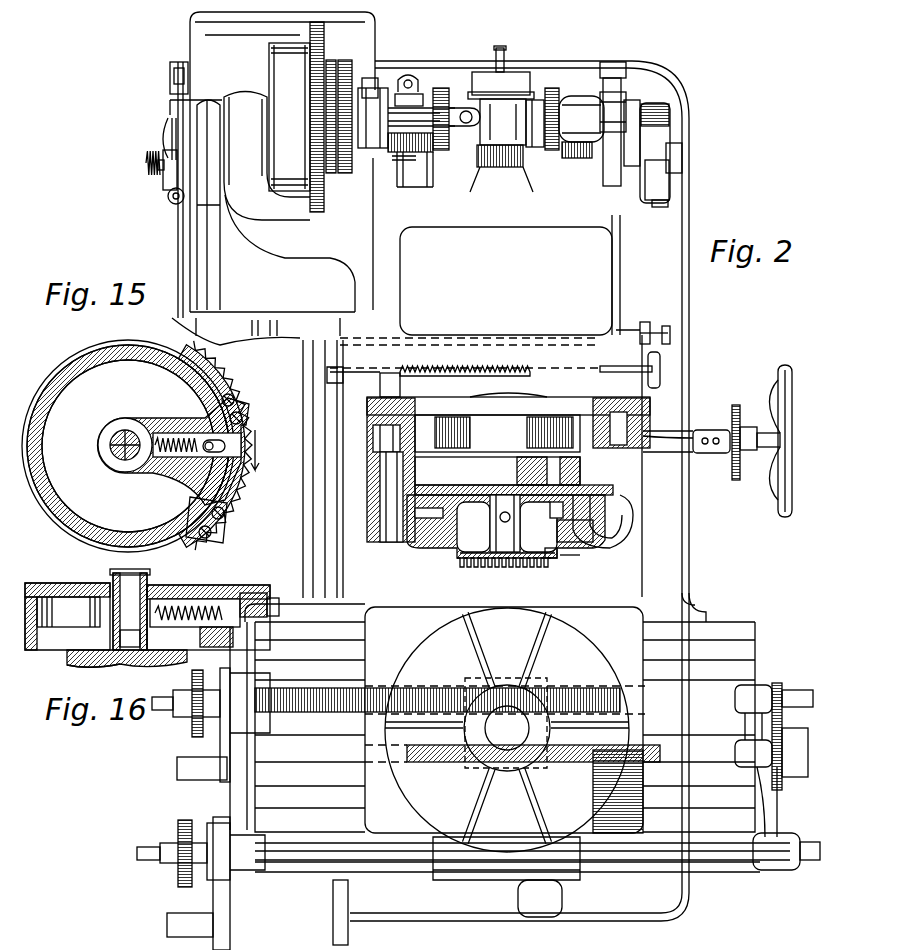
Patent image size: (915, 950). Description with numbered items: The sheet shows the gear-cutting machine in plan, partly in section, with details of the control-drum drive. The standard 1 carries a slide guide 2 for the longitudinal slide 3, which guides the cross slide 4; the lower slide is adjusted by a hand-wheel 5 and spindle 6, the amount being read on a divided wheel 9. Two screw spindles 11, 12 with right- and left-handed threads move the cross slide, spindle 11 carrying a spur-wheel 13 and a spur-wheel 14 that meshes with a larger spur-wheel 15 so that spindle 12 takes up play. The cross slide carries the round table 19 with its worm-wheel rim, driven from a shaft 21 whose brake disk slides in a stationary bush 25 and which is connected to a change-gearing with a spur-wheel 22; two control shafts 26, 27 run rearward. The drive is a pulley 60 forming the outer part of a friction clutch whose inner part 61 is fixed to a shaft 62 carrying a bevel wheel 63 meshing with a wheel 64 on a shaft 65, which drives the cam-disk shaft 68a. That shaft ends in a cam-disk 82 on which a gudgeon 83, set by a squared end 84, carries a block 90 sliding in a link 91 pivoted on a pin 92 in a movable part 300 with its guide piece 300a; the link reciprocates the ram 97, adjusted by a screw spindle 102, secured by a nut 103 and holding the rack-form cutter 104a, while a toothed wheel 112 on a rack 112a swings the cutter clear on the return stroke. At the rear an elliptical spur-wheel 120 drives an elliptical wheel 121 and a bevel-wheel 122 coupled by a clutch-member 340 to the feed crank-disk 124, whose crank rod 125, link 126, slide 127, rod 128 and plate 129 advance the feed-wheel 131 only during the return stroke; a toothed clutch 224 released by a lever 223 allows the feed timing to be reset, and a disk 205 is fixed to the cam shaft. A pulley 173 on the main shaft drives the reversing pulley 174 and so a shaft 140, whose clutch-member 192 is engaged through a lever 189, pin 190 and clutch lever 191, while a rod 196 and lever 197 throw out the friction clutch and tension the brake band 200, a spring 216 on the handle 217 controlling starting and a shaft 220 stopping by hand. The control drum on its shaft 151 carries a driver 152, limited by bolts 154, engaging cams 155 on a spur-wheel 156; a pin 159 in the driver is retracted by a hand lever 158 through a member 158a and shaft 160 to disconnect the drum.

In FIG. 2, the standard 1 is at (612, 272).
In FIG. 16, the standard 1 is at (125, 663).
In FIG. 2, the slide guide 2 is at (644, 573).
In FIG. 2, the longitudinal slide 3 is at (720, 642).
In FIG. 2, the cross slide 4 is at (645, 810).
In FIG. 2, the hand-wheel 5 is at (783, 490).
In FIG. 2, the spindle 6 is at (672, 445).
In FIG. 2, the wheel having a division 9 is at (736, 405).
In FIG. 2, the screw spindle 11 is at (322, 705).
In FIG. 2, the screw spindle 12 is at (355, 728).
In FIG. 2, the spur-wheel 13 is at (192, 727).
In FIG. 2, the spur-wheel 14 is at (776, 685).
In FIG. 2, the spur-wheel 15 is at (780, 790).
In FIG. 2, the round table 19 is at (507, 730).
In FIG. 2, the shaft 21 is at (283, 855).
In FIG. 2, the spur-wheel 22 is at (180, 828).
In FIG. 2, the stationary bush 25 is at (782, 870).
In FIG. 2, the shaft 26 is at (345, 580).
In FIG. 15, the shaft 27 is at (300, 478).
In FIG. 2, the pulley 60 is at (278, 75).
In FIG. 2, the inner part of friction clutch 61 is at (335, 195).
In FIG. 2, the shaft 62 is at (372, 95).
In FIG. 2, the bevel wheel 63 is at (442, 88).
In FIG. 2, the bevel wheel 64 is at (410, 78).
In FIG. 2, the shaft 65 is at (418, 96).
In FIG. 2, the cam-disk shaft 68a is at (505, 362).
In FIG. 2, the cam-disk 82 is at (440, 412).
In FIG. 2, the gudgeon 83 is at (537, 448).
In FIG. 2, the squared end 84 is at (502, 50).
In FIG. 2, the block 90 is at (575, 452).
In FIG. 2, the link 91 is at (493, 462).
In FIG. 2, the pin 92 is at (391, 541).
In FIG. 2, the ram 97 is at (565, 563).
In FIG. 2, the screw spindle 102 is at (500, 508).
In FIG. 2, the nut 103 is at (495, 566).
In FIG. 2, the multiple-tooth cutter 104a is at (545, 566).
In FIG. 2, the toothed wheel 112 is at (573, 520).
In FIG. 2, the rack 112a is at (567, 508).
In FIG. 2, the elliptical spur-wheel 120 is at (535, 166).
In FIG. 2, the elliptical wheel 121 is at (550, 160).
In FIG. 2, the bevel-wheel 122 is at (552, 100).
In FIG. 2, the feed crank-disk 124 is at (605, 107).
In FIG. 2, the crank rod 125 is at (622, 153).
In FIG. 2, the link 126 is at (625, 108).
In FIG. 2, the slide 127 is at (668, 160).
In FIG. 2, the rod 128 is at (645, 130).
In FIG. 2, the plate 129 is at (668, 181).
In FIG. 2, the feed-wheel 131 is at (663, 205).
In FIG. 2, the shaft 140 is at (160, 168).
In FIG. 15, the shaft 151 is at (110, 447).
In FIG. 15, the driver 152 is at (193, 433).
In FIG. 16, the driver 152 is at (180, 610).
In FIG. 15, the bolts 154 is at (207, 452).
In FIG. 16, the bolts 154 is at (213, 643).
In FIG. 15, the cams 155 is at (238, 406).
In FIG. 16, the cams 155 is at (256, 617).
In FIG. 15, the spur-wheel 156 is at (240, 507).
In FIG. 16, the spur-wheel 156 is at (262, 594).
In FIG. 2, the hand lever 158 is at (650, 322).
In FIG. 2, the member 158a is at (180, 63).
In FIG. 15, the pin 159 is at (160, 457).
In FIG. 16, the pin 159 is at (195, 613).
In FIG. 2, the shaft 160 is at (188, 74).
In FIG. 15, the shaft 160 is at (125, 428).
In FIG. 16, the shaft 160 is at (125, 574).
In FIG. 2, the pulley 173 is at (200, 108).
In FIG. 2, the pulley 174 is at (197, 278).
In FIG. 2, the lever 189 is at (168, 138).
In FIG. 2, the pin 190 is at (170, 201).
In FIG. 2, the clutch lever 191 is at (168, 185).
In FIG. 2, the clutch-member 192 is at (148, 160).
In FIG. 2, the vertical rod 196 is at (410, 153).
In FIG. 2, the lever 197 is at (378, 80).
In FIG. 2, the brake band 200 is at (345, 165).
In FIG. 2, the disk 205 is at (490, 75).
In FIG. 2, the spring 216 is at (465, 360).
In FIG. 2, the handle 217 is at (656, 362).
In FIG. 2, the shaft 220 is at (398, 368).
In FIG. 2, the lever 223 is at (465, 128).
In FIG. 2, the toothed clutch 224 is at (505, 170).
In FIG. 2, the movable part 300 is at (633, 478).
In FIG. 2, the guide piece 300a is at (622, 522).
In FIG. 2, the clutch-member 340 is at (535, 100).